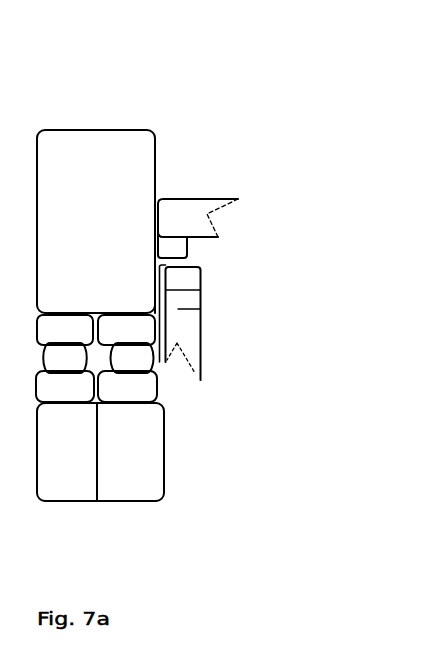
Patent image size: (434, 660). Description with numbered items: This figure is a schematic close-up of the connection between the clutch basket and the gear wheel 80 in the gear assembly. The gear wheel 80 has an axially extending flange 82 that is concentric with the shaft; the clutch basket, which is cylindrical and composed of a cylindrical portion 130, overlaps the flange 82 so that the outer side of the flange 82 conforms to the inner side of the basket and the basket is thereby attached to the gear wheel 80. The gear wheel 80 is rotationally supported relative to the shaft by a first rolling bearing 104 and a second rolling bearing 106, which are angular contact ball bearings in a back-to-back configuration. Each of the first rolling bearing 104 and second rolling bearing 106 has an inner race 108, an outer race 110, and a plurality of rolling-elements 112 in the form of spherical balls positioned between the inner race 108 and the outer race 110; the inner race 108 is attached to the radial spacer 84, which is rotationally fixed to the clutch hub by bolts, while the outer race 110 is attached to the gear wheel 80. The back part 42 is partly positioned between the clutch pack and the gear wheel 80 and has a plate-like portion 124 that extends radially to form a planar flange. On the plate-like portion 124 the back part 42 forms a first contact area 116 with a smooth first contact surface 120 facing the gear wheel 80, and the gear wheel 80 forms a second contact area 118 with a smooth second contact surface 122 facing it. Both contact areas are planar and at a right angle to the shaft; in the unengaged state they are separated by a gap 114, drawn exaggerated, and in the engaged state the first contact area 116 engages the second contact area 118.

The gear wheel 80 is at (63, 165).
The axially extending flange 82 is at (168, 252).
The radial spacer 84 is at (138, 466).
The back part 42 is at (185, 325).
The first rolling bearing 104 is at (203, 439).
The second rolling bearing 106 is at (65, 385).
The inner race 108 is at (127, 385).
The outer race 110 is at (138, 325).
The rolling-elements 112 is at (127, 360).
The gap 114 is at (160, 262).
The first contact area 116 is at (167, 280).
The second contact area 118 is at (152, 272).
The first contact surface 120 is at (200, 290).
The second contact surface 122 is at (158, 308).
The plate-like portion 124 is at (200, 309).
The cylindrical portion 130 is at (208, 205).